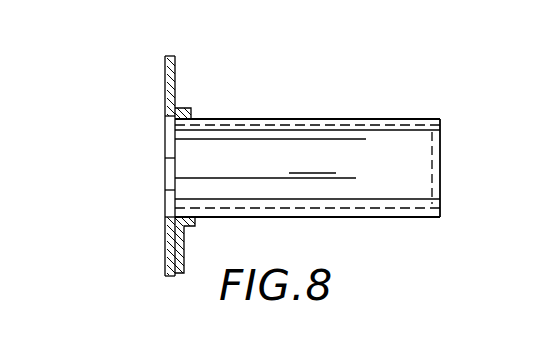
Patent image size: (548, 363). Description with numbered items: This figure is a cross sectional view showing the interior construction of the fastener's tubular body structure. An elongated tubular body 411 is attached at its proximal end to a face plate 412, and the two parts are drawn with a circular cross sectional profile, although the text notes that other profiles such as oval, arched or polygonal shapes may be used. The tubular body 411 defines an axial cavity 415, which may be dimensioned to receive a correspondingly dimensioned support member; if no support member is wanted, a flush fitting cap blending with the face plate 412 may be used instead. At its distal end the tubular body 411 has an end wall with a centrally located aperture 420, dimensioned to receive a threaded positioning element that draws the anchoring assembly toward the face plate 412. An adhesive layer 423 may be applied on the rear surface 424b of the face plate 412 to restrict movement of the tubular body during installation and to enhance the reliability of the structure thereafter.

The tubular body 411 is at (358, 118).
The face plate 412 is at (171, 248).
The axial cavity 415 is at (270, 158).
The aperture 420 is at (437, 172).
The adhesive layer 423 is at (176, 71).
The rear surface 424b is at (177, 90).